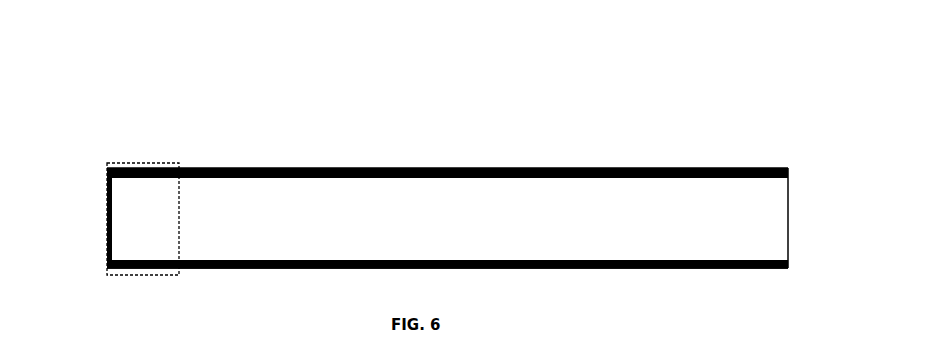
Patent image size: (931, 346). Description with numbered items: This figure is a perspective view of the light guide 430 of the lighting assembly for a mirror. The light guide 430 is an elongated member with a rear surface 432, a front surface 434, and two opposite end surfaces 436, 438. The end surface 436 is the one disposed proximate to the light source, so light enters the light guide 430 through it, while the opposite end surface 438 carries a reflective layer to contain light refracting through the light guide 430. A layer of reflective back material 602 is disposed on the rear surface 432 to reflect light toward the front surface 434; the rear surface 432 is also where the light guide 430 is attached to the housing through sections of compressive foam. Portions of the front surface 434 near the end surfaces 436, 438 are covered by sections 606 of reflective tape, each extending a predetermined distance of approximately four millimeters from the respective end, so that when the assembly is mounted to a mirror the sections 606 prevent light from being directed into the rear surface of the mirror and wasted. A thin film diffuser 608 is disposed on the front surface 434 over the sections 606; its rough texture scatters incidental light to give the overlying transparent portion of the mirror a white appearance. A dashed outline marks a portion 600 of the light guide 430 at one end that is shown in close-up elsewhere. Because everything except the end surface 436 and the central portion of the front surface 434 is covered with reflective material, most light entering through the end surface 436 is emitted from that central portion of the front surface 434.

The light guide 430 is at (256, 112).
The rear surface 432 is at (505, 168).
The front surface 434 is at (635, 262).
The end surface 436 is at (790, 220).
The end surface 438 is at (108, 171).
The portion 600 is at (165, 272).
The reflective back material 602 is at (395, 168).
The sections of reflective tape 606 is at (135, 268).
The thin film diffuser 608 is at (388, 263).